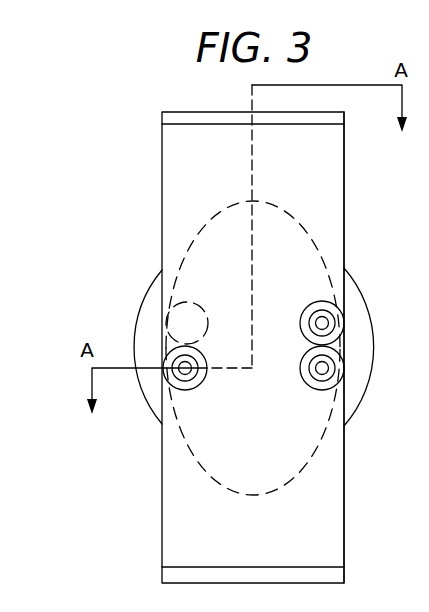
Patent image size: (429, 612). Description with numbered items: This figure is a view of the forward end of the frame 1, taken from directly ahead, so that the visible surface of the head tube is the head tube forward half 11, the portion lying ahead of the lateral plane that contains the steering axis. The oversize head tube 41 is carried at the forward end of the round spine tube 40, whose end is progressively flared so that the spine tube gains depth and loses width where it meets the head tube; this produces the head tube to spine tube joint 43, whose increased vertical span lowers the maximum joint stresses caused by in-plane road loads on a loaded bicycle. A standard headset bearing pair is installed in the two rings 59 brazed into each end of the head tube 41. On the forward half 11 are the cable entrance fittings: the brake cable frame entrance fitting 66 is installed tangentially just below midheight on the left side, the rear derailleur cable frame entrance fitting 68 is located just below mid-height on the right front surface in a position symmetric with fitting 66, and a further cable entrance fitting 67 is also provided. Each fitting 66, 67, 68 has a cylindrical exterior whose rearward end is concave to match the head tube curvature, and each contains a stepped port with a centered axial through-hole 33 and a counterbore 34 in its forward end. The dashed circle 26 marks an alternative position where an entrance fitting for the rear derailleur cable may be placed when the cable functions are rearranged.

The frame 1 is at (149, 175).
The head tube forward half 11 is at (330, 212).
The dashed circle 26 is at (185, 303).
The axial through-hole 33 is at (312, 360).
The counterbore 34 is at (316, 372).
The spine tube 40 is at (150, 292).
The head tube 41 is at (345, 205).
The head tube to spine tube joint 43 is at (205, 497).
The rings 59 is at (345, 117).
The brake cable frame entrance fitting 66 is at (315, 392).
The cable entrance fitting 67 is at (315, 302).
The rear derailleur cable frame entrance fitting 68 is at (200, 385).